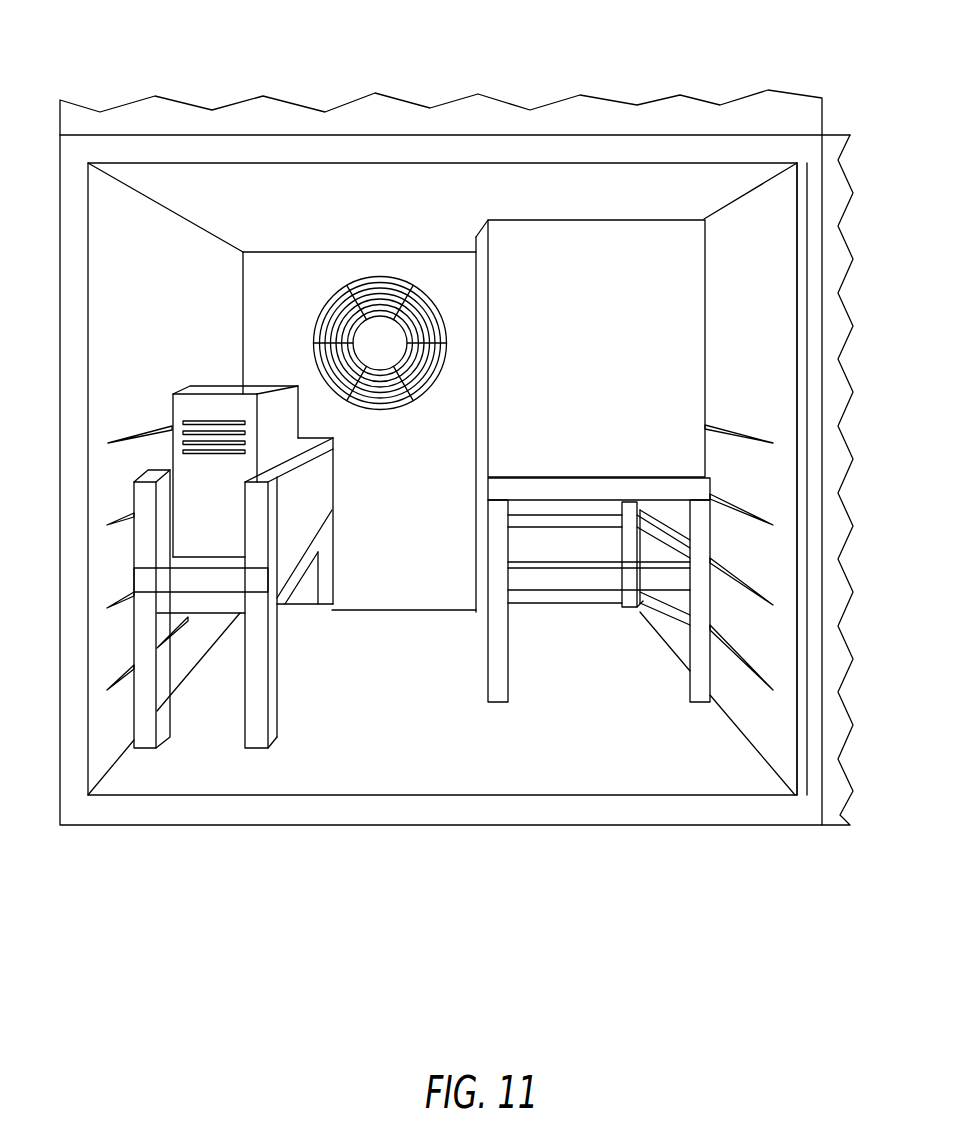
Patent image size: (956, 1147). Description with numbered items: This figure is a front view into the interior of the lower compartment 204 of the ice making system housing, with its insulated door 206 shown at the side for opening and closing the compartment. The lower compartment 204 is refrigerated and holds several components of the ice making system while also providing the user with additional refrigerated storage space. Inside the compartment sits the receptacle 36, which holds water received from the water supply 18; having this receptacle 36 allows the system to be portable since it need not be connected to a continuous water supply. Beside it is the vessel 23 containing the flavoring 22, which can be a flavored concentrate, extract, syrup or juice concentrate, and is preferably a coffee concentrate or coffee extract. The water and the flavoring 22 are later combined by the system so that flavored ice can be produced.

The lower compartment 204 is at (397, 125).
The insulated door 206 is at (833, 850).
The water supply 18 is at (485, 232).
The receptacle 36 is at (667, 240).
The vessel 23 is at (267, 388).
The flavoring 22 is at (223, 440).